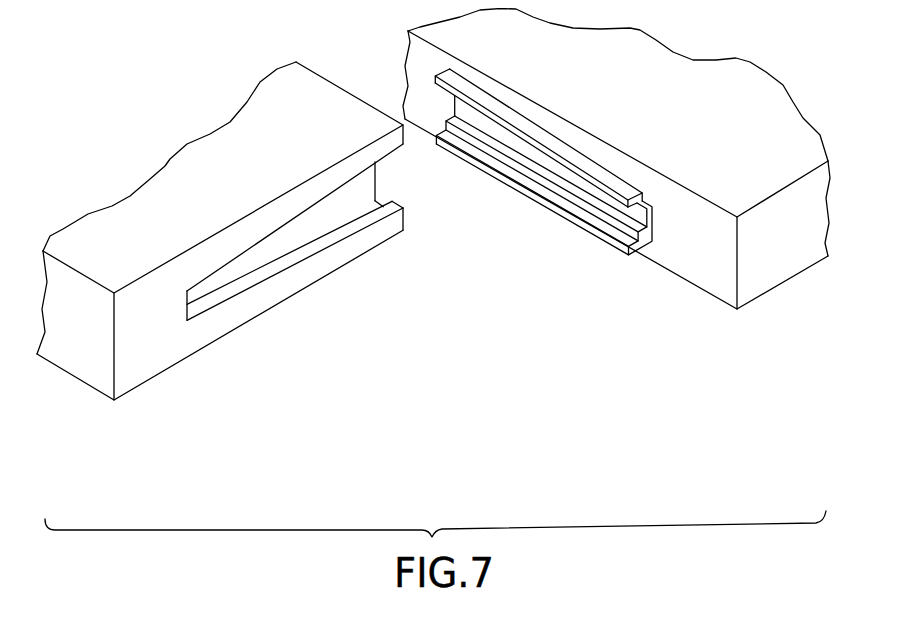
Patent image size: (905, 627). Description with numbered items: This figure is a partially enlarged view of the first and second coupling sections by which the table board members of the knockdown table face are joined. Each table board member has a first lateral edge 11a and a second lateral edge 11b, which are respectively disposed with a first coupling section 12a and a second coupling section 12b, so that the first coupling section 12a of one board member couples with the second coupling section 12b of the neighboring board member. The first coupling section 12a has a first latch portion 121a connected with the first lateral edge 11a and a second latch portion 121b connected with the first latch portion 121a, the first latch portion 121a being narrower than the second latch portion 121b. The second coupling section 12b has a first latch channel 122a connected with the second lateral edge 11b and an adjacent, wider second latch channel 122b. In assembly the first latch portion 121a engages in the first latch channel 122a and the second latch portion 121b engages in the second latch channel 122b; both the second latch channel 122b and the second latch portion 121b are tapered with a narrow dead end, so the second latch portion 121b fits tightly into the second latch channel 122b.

The first lateral edge 11a is at (710, 279).
The second lateral edge 11b is at (119, 378).
The first coupling section 12a is at (565, 243).
The second coupling section 12b is at (278, 310).
The first latch portion 121a is at (654, 219).
The second latch portion 121b is at (544, 222).
The first latch channel 122a is at (324, 374).
The second latch channel 122b is at (285, 245).